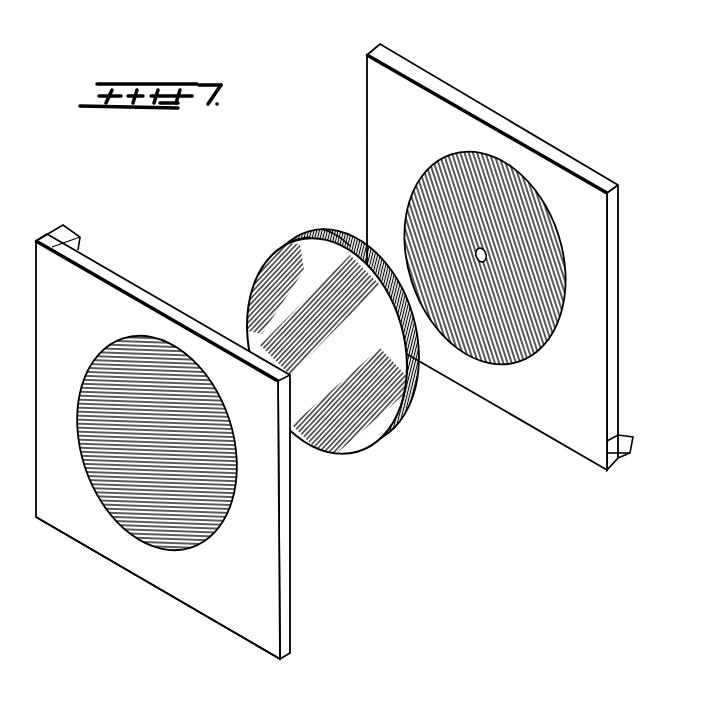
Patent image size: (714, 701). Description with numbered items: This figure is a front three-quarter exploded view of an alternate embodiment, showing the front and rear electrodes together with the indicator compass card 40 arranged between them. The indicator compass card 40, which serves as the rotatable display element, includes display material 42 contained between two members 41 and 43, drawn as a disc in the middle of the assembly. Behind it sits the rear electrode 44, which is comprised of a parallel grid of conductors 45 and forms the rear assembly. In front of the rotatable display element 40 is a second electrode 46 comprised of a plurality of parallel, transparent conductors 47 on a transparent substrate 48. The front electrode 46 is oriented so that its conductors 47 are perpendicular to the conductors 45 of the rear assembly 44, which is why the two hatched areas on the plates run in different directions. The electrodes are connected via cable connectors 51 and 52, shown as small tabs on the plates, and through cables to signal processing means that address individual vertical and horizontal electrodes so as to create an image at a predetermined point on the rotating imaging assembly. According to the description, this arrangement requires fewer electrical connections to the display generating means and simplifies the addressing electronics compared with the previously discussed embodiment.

The indicator compass card 40 is at (413, 418).
The member 41 is at (250, 300).
The display material 42 is at (296, 242).
The member 43 is at (332, 256).
The rear electrode 44 is at (563, 153).
The parallel grid of conductors 45 is at (550, 234).
The second electrode 46 is at (290, 510).
The transparent conductors 47 is at (203, 535).
The transparent substrate 48 is at (222, 627).
The cable connector 51 is at (630, 450).
The cable connector 52 is at (60, 234).